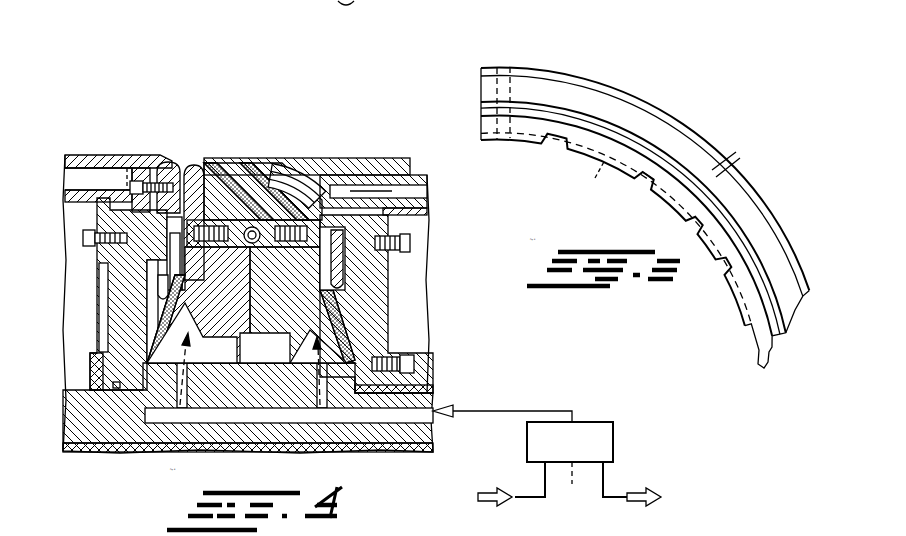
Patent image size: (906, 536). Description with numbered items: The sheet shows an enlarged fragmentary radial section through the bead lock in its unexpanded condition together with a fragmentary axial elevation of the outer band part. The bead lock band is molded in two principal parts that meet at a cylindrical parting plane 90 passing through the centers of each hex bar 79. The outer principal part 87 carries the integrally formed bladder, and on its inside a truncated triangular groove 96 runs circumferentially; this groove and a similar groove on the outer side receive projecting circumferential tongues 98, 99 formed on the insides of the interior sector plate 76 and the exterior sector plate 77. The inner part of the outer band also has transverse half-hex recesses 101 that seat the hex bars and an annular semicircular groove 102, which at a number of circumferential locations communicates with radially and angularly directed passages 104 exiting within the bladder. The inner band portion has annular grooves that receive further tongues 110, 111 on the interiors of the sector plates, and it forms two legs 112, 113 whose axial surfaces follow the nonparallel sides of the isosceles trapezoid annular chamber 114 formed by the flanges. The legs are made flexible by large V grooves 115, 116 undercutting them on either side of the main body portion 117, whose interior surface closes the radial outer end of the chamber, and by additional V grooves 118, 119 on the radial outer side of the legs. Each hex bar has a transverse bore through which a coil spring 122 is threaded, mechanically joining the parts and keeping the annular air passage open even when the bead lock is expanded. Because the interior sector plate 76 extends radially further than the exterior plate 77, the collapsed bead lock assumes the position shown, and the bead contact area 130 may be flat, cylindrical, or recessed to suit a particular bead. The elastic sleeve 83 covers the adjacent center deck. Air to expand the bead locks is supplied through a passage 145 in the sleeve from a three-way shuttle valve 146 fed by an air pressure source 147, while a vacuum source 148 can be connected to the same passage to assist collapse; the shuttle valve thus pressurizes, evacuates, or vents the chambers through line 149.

In FIG. 4, the interior sector plate 76 is at (173, 162).
In FIG. 4, the exterior sector plate 77 is at (314, 164).
In FIG. 4, the hex bar 79 is at (250, 183).
In FIG. 4, the elastic sleeve 83 is at (106, 155).
In FIG. 6, the outer principal part 87 is at (762, 192).
In FIG. 6, the parting plane 90 is at (583, 153).
In FIG. 6, the truncated triangular groove 96 is at (613, 134).
In FIG. 4, the tongue 98 is at (205, 165).
In FIG. 4, the tongue 99 is at (280, 168).
In FIG. 6, the half-hex recess 101 is at (648, 176).
In FIG. 6, the annular semicircular groove 102 is at (595, 180).
In FIG. 6, the radial passage 104 is at (740, 160).
In FIG. 4, the tongue 110 is at (198, 305).
In FIG. 4, the tongue 111 is at (302, 305).
In FIG. 4, the leg 112 is at (150, 335).
In FIG. 4, the leg 113 is at (345, 326).
In FIG. 4, the annular chamber 114 is at (193, 352).
In FIG. 4, the V groove 115 is at (200, 343).
In FIG. 4, the V groove 116 is at (302, 333).
In FIG. 4, the main body portion 117 is at (240, 342).
In FIG. 4, the V groove 118 is at (160, 288).
In FIG. 4, the V groove 119 is at (340, 289).
In FIG. 4, the coil spring 122 is at (253, 250).
In FIG. 4, the bead contact area 130 is at (236, 162).
In FIG. 4, the passage 145 is at (373, 410).
In FIG. 4, the shuttle valve 146 is at (615, 443).
In FIG. 4, the air pressure source 147 is at (487, 506).
In FIG. 4, the vacuum source 148 is at (660, 500).
In FIG. 4, the vent line 149 is at (574, 484).